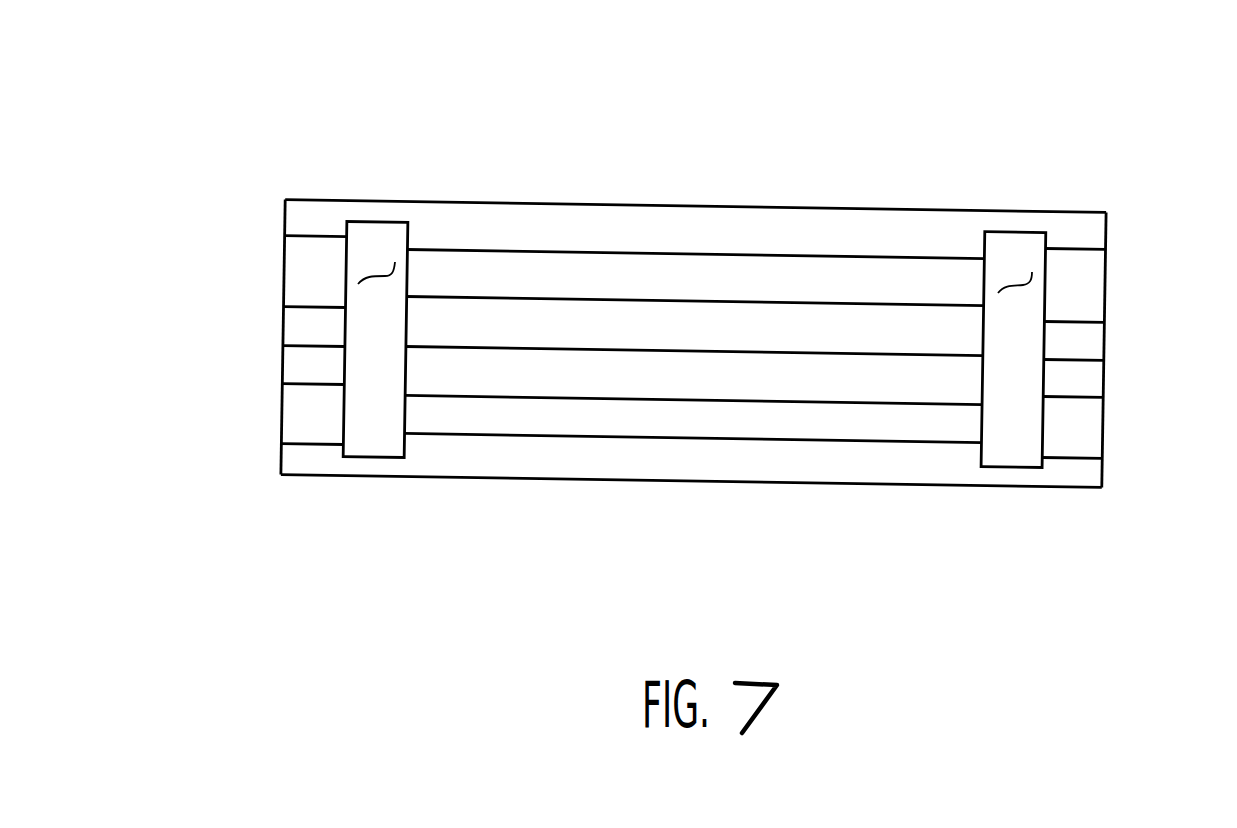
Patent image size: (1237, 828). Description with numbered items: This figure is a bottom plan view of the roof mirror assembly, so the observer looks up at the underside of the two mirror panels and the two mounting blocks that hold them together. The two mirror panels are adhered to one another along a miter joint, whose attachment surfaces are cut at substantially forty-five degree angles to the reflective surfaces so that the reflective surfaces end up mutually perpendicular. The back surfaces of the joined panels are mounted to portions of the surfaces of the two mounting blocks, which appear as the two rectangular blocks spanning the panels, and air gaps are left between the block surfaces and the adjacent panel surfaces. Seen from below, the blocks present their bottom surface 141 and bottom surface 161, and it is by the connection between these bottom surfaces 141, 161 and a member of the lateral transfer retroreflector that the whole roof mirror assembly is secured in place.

The bottom surface of block 141 is at (1022, 283).
The bottom surface of block 161 is at (385, 262).